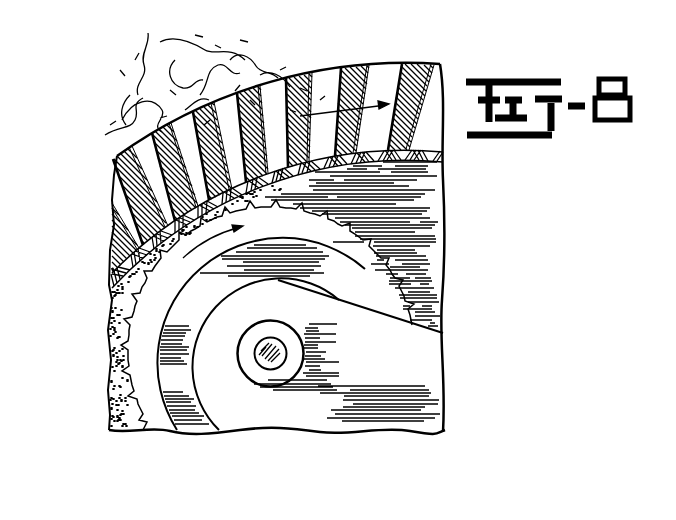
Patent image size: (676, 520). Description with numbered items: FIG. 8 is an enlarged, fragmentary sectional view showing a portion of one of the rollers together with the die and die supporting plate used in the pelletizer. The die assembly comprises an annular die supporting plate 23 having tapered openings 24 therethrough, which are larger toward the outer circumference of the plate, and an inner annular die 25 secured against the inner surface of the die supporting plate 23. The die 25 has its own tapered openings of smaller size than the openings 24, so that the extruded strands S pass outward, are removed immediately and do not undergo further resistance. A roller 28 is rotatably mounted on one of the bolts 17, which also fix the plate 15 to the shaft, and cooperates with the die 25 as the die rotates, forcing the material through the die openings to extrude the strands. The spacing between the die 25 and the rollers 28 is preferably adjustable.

The plate 15 is at (405, 353).
The bolts 17 is at (269, 357).
The die supporting plate 23 is at (113, 183).
The tapered openings 24 is at (105, 120).
The die 25 is at (373, 162).
The rollers 28 is at (444, 279).